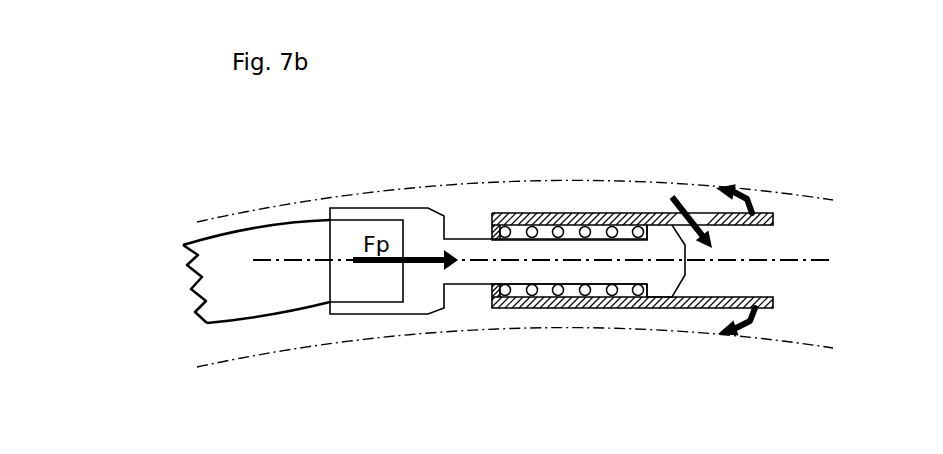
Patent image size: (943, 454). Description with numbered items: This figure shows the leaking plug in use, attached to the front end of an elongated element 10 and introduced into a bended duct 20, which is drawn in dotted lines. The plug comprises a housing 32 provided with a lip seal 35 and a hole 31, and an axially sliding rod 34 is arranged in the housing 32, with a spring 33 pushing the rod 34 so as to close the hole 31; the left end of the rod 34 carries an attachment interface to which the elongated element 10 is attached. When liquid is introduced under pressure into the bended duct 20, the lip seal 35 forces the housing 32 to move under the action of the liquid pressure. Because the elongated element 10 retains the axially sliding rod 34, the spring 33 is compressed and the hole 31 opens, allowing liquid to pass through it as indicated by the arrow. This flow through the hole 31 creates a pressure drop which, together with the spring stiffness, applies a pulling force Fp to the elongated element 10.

The elongated element 10 is at (257, 245).
The bended duct 20 is at (287, 349).
The hole 31 is at (698, 218).
The housing 32 is at (553, 214).
The spring 33 is at (552, 300).
The axially sliding rod 34 is at (425, 303).
The lip seal 35 is at (718, 333).